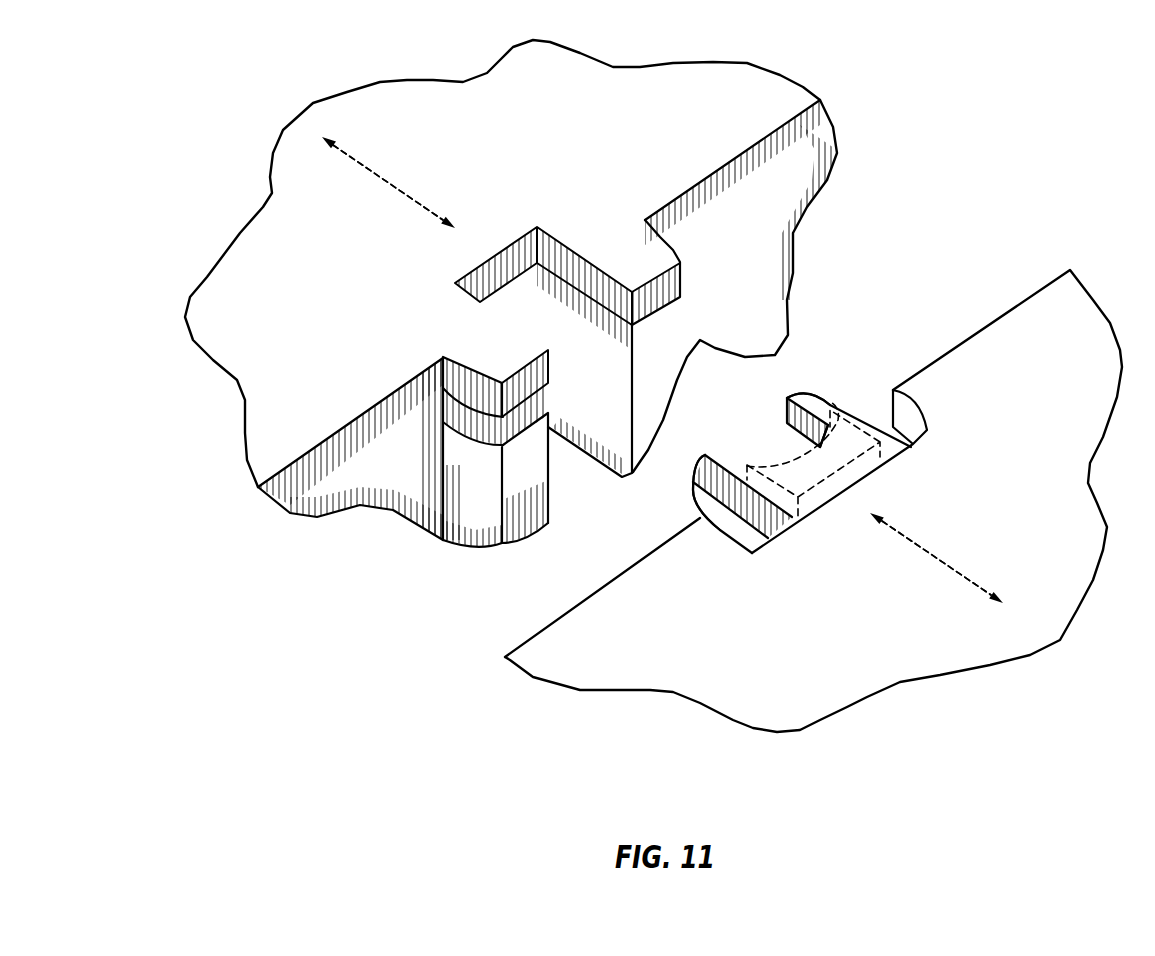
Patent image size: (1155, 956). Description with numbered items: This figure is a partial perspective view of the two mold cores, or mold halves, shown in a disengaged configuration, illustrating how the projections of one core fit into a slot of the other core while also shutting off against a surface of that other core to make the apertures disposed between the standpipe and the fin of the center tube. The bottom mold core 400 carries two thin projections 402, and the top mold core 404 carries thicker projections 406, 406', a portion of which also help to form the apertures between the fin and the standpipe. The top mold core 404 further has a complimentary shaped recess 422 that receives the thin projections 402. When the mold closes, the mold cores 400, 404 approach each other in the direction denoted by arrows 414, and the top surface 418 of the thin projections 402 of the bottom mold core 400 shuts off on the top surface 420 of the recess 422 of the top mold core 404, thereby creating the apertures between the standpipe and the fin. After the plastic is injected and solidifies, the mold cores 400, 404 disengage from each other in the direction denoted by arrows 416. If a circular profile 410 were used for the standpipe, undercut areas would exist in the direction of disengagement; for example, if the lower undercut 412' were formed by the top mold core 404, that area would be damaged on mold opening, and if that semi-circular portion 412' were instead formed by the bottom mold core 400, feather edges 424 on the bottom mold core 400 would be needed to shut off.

The bottom mold core 400 is at (815, 641).
The thin projections 402 is at (693, 487).
The top mold core 404 is at (640, 124).
The thicker projections 406 is at (509, 405).
The key face of first plate 406' is at (690, 272).
The circular profile 410 is at (793, 463).
The lower undercut 412' is at (837, 454).
The arrows 414 is at (420, 205).
The arrows 416 is at (360, 162).
The top surface 418 is at (710, 473).
The top surface 420 is at (600, 306).
The complimentary shaped recess 422 is at (498, 432).
The feather edges 424 is at (753, 467).